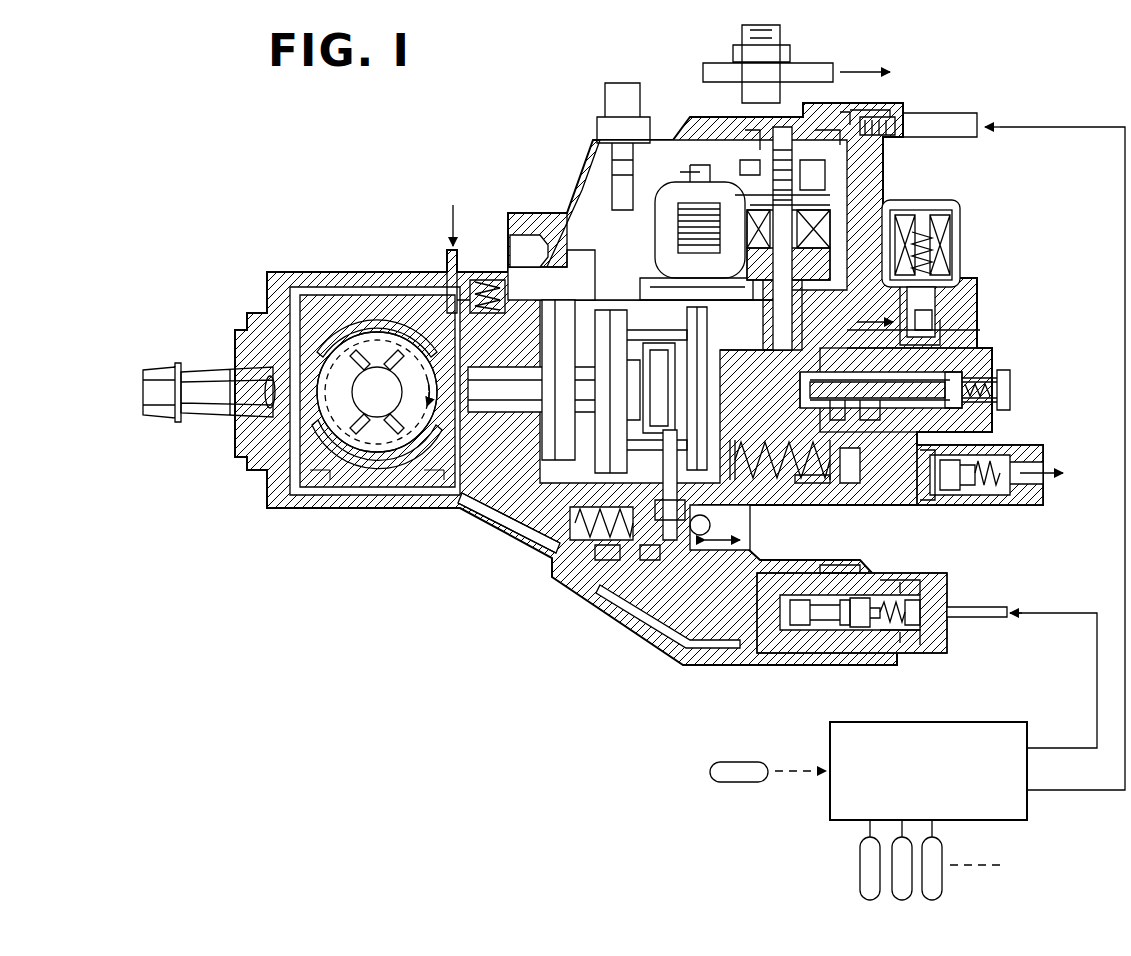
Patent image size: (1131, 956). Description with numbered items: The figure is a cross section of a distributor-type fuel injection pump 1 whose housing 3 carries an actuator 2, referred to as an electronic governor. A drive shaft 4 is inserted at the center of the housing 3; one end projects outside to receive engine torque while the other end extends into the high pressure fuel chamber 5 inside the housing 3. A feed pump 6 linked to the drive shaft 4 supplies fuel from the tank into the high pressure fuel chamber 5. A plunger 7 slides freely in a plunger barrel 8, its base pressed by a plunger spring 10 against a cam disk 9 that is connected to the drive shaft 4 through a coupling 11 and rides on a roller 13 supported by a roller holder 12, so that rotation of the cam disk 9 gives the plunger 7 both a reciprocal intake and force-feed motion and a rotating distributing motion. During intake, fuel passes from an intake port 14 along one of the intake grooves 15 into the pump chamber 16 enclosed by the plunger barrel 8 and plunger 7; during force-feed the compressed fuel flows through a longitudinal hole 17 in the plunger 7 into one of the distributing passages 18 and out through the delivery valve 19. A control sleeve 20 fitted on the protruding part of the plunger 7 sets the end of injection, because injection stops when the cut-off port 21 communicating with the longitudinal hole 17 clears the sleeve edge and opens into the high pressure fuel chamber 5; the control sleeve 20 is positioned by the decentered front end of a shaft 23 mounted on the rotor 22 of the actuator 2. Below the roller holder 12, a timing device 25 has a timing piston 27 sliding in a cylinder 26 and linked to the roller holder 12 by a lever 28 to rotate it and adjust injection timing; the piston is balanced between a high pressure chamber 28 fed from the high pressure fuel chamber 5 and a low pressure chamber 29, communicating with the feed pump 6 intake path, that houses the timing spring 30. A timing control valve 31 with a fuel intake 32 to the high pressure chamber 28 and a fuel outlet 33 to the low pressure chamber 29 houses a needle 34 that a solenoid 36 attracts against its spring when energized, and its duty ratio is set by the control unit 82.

The fuel injection pump 1 is at (346, 250).
The actuator 2 is at (810, 228).
The housing 3 is at (518, 225).
The drive shaft 4 is at (208, 400).
The high pressure fuel chamber 5 is at (742, 336).
The feed pump 6 is at (400, 433).
The plunger 7 is at (980, 342).
The plunger barrel 8 is at (993, 430).
The cam disk 9 is at (762, 450).
The plunger spring 10 is at (807, 480).
The coupling 11 is at (656, 355).
The roller holder 12 is at (602, 562).
The roller 13 is at (500, 530).
The intake port 14 is at (940, 300).
The intake grooves 15 is at (997, 405).
The pump chamber 16 is at (995, 373).
The longitudinal hole 17 is at (900, 493).
The distributing passages 18 is at (970, 492).
The delivery valve 19 is at (1025, 508).
The control sleeve 20 is at (848, 483).
The cut-off port 21 is at (940, 327).
The rotor 22 is at (872, 208).
The shaft 23 is at (745, 240).
The timing device 25 is at (738, 668).
The cylinder 26 is at (750, 622).
The timing piston 27 is at (668, 560).
The high pressure chamber 28 is at (682, 560).
The low pressure chamber 29 is at (577, 550).
The timing spring 30 is at (565, 532).
The timing control valve 31 is at (943, 655).
The fuel intake 32 is at (830, 573).
The fuel outlet 33 is at (648, 562).
The needle 34 is at (810, 628).
The solenoid 36 is at (907, 632).
The control unit 82 is at (1030, 722).